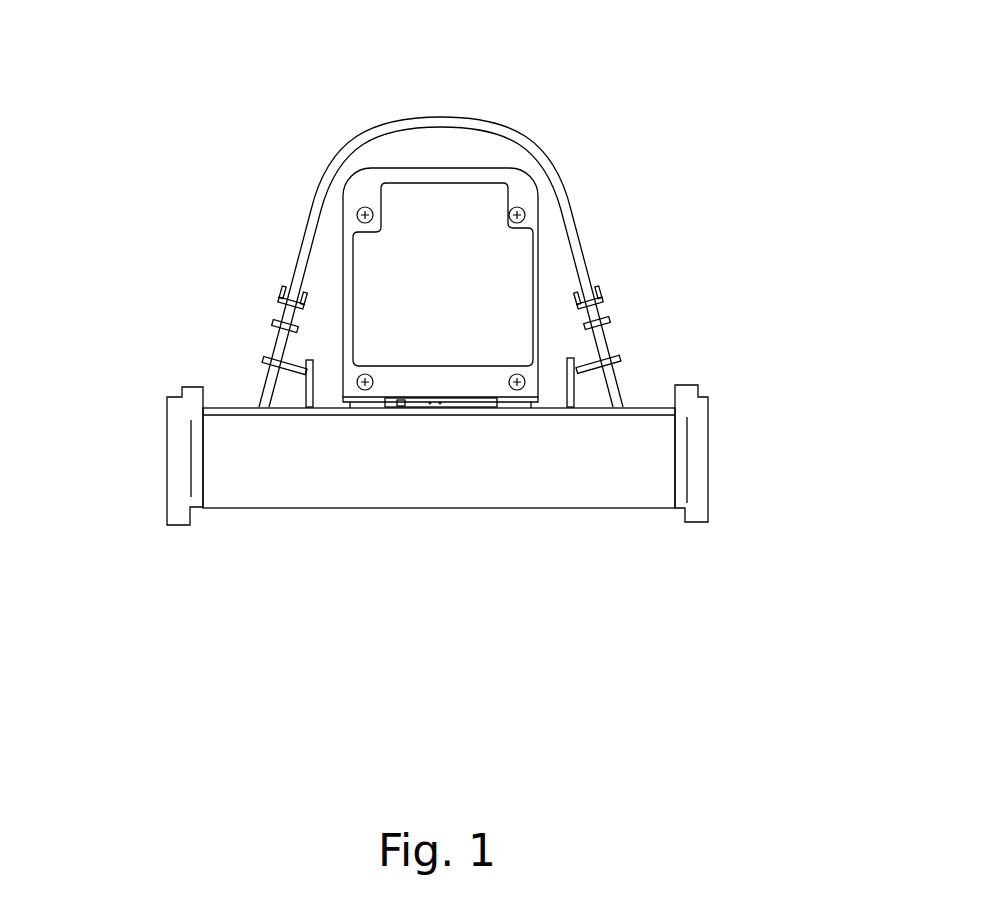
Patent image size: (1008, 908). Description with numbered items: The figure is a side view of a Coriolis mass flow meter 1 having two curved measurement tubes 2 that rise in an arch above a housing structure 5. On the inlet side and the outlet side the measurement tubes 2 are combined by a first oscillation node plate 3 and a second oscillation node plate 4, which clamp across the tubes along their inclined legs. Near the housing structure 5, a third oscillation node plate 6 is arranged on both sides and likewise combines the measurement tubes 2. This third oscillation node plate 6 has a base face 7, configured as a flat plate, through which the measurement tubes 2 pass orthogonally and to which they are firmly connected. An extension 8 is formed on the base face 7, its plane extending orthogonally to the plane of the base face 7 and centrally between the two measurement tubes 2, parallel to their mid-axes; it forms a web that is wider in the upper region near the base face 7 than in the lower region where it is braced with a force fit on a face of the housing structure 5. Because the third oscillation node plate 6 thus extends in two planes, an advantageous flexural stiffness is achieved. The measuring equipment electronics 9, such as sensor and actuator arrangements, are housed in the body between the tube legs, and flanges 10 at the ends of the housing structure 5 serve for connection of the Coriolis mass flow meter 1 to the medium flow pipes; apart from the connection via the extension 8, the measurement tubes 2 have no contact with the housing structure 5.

The Coriolis mass flow meter 1 is at (652, 259).
The measurement tubes 2 is at (480, 124).
The first oscillation node plate 3 is at (280, 298).
The second oscillation node plate 4 is at (275, 323).
The housing structure 5 is at (503, 480).
The third oscillation node plate 6 is at (266, 381).
The base face 7 is at (287, 367).
The extension 8 is at (301, 390).
The measuring equipment electronics 9 is at (473, 278).
The flanges 10 is at (177, 453).